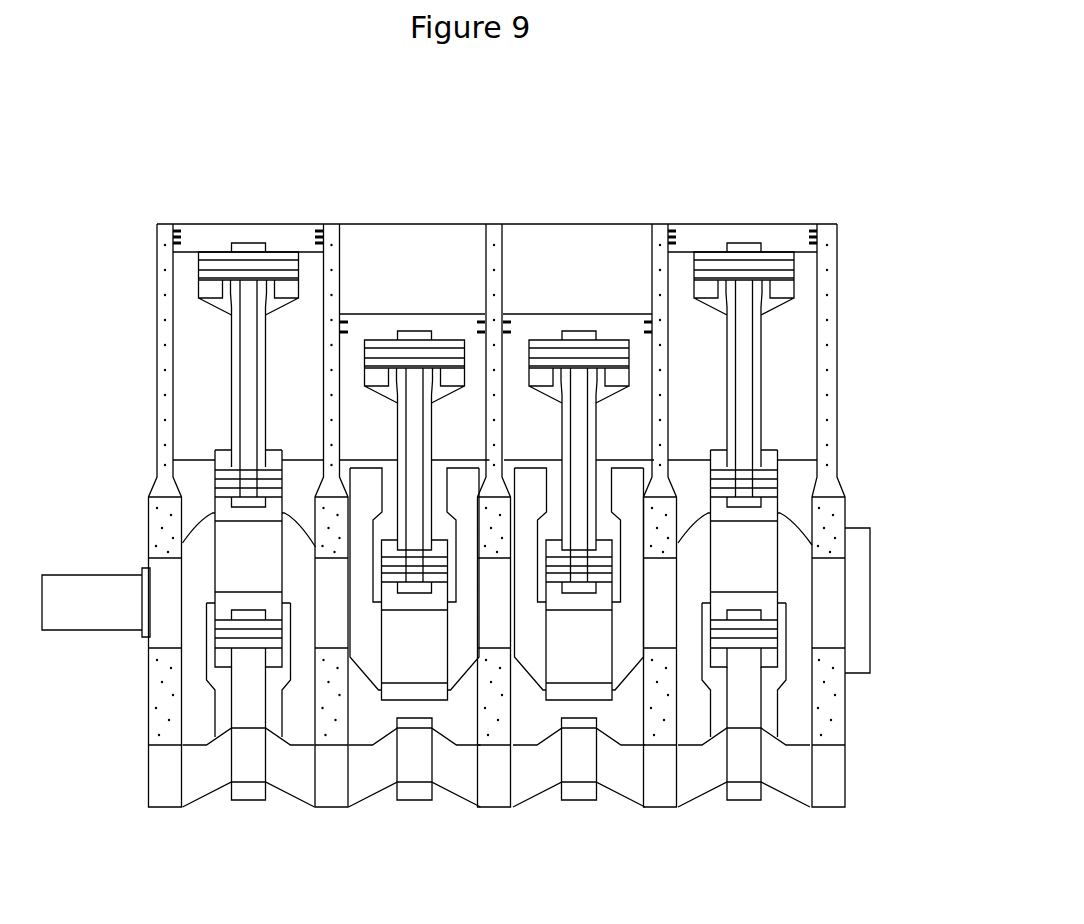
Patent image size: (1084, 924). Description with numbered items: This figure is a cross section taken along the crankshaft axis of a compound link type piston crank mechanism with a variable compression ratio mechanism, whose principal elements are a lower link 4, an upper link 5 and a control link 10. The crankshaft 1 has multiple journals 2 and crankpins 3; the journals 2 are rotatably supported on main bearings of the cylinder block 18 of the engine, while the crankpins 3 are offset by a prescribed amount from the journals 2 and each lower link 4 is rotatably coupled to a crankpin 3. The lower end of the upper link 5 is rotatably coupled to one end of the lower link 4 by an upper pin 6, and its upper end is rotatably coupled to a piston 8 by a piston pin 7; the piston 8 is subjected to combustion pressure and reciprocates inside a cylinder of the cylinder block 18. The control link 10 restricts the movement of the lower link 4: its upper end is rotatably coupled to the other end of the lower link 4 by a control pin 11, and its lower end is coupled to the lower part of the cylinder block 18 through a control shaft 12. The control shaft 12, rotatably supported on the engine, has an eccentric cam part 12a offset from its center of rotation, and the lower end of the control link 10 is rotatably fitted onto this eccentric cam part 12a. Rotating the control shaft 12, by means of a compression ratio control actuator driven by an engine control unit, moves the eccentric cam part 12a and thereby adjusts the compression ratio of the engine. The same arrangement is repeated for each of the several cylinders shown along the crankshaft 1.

The crankshaft 1 is at (165, 638).
The journal 2 is at (163, 650).
The crankpin 3 is at (245, 560).
The lower link 4 is at (767, 508).
The upper link 5 is at (237, 384).
The upper pin 6 is at (777, 463).
The piston pin 7 is at (232, 268).
The piston 8 is at (203, 237).
The control link 10 is at (743, 700).
The control pin 11 is at (757, 635).
The control shaft 12 is at (788, 778).
The eccentric cam part 12a is at (238, 766).
The cylinder block 18 is at (840, 268).